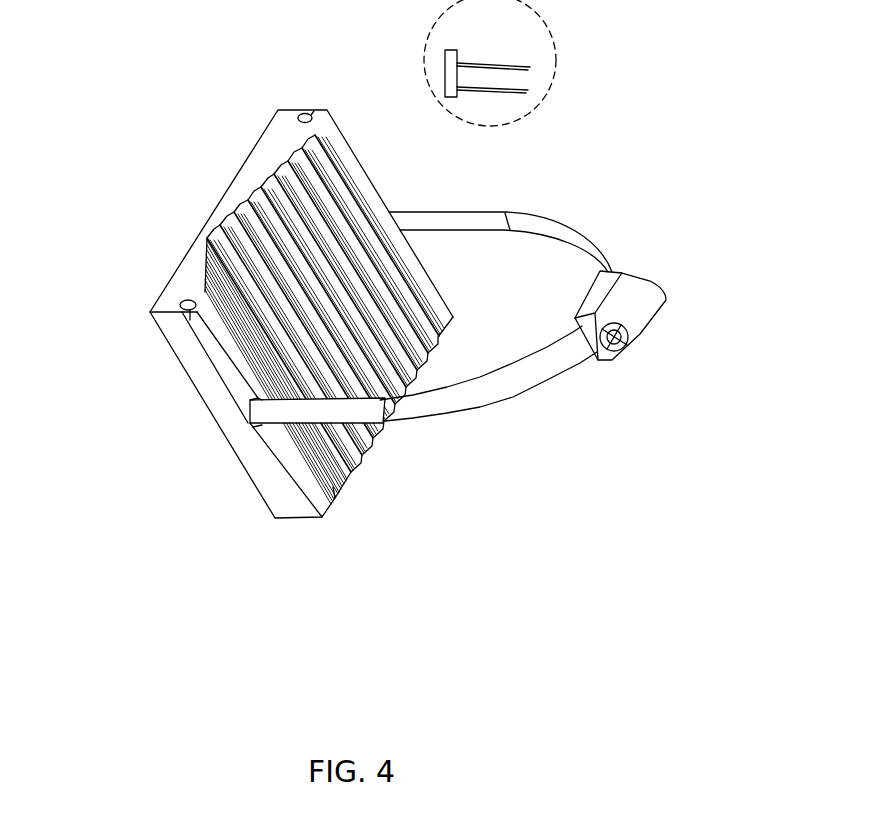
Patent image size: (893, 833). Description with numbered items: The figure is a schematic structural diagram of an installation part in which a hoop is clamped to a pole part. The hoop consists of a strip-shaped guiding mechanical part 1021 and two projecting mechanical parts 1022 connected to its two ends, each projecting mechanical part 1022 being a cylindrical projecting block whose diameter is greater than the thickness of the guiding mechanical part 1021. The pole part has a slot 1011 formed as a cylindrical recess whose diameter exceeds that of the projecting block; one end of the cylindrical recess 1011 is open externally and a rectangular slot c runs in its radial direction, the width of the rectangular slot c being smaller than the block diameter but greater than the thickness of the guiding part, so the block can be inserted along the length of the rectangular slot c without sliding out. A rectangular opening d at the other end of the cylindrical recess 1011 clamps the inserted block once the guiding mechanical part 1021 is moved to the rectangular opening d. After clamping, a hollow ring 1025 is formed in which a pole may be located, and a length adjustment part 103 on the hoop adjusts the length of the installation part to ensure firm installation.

The slot 1011 is at (182, 302).
The strip-shaped guiding mechanical part 1021 is at (353, 415).
The projecting mechanical part 1022 is at (387, 212).
The hollow ring 1025 is at (495, 352).
The length adjustment part 103 is at (647, 333).
The rectangular slot c is at (212, 372).
The rectangular opening d is at (250, 427).